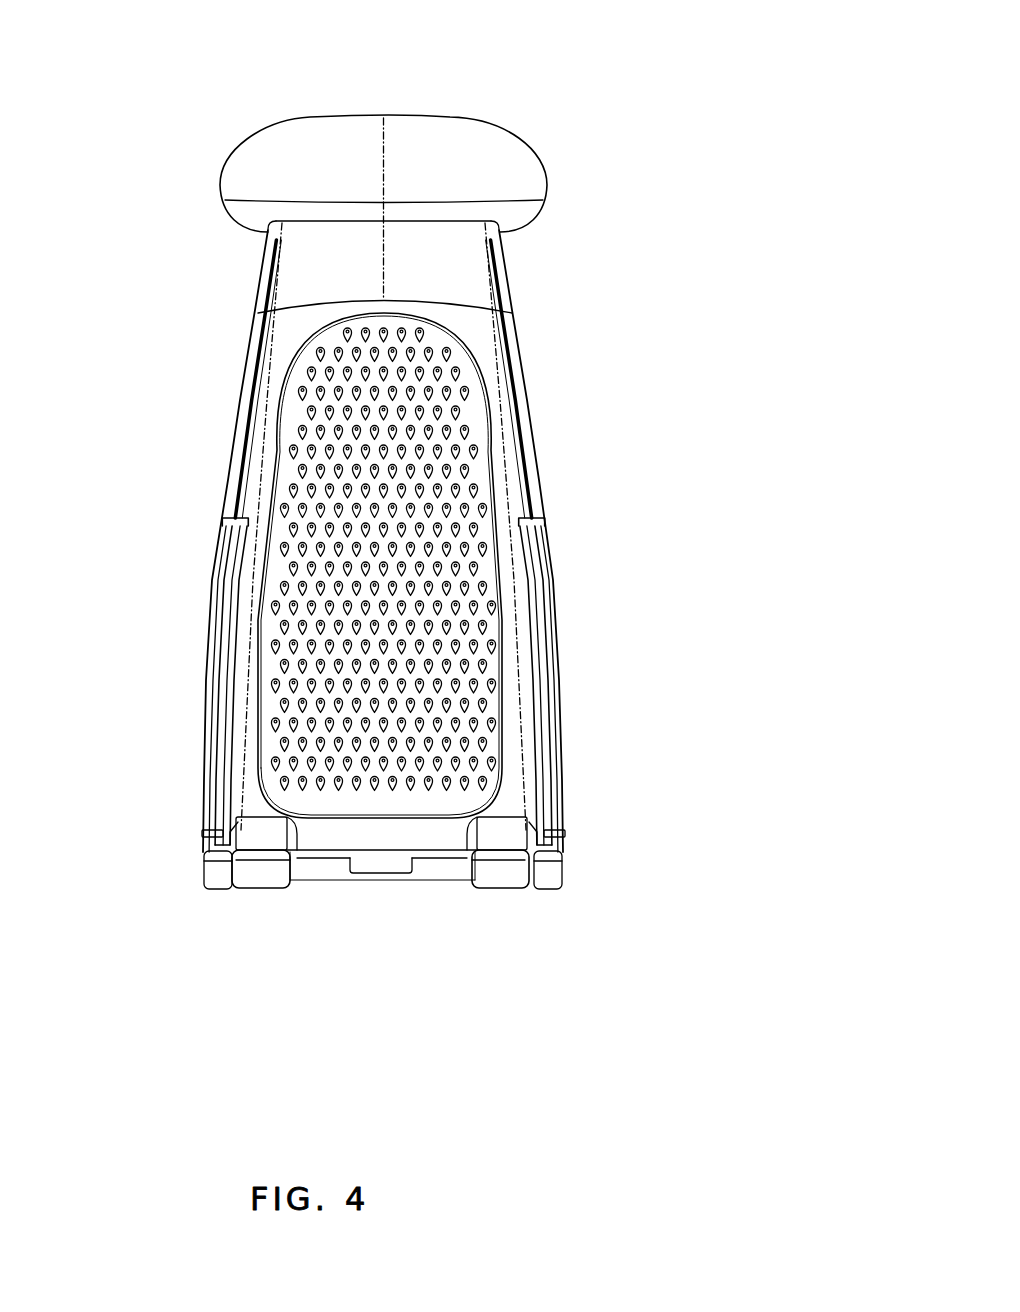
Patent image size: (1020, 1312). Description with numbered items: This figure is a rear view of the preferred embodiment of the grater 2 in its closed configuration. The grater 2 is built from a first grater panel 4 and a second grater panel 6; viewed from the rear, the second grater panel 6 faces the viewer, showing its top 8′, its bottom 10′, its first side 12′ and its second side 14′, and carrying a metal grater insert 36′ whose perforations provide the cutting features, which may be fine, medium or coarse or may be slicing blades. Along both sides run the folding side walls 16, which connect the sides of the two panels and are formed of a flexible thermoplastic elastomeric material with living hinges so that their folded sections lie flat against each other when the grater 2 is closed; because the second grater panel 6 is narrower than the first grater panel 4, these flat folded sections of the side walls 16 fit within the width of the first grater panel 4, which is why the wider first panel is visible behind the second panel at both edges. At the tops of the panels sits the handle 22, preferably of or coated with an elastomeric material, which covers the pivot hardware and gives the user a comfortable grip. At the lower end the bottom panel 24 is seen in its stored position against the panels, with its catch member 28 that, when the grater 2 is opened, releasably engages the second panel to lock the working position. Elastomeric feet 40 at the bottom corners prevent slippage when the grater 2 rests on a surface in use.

The grater 2 is at (712, 118).
The first grater panel 4 is at (555, 617).
The second grater panel 6 is at (503, 367).
The top 8′ is at (397, 252).
The bottom 10′ is at (372, 840).
The first side 12′ is at (513, 529).
The second side 14′ is at (246, 581).
The folding side walls 16 is at (218, 740).
The handle 22 is at (492, 143).
The bottom panel 24 is at (438, 872).
The catch member 28 is at (402, 868).
The grater insert 36′ is at (460, 455).
The feet 40 is at (257, 884).